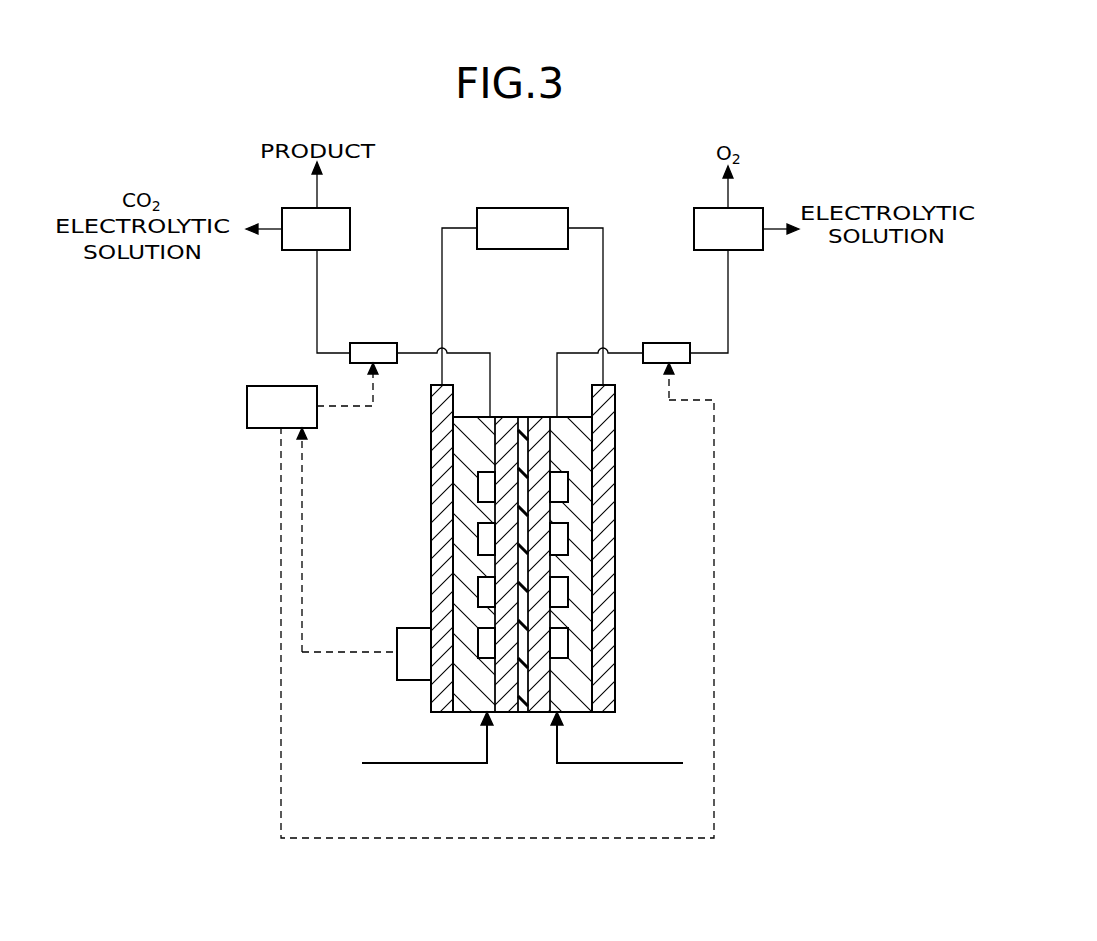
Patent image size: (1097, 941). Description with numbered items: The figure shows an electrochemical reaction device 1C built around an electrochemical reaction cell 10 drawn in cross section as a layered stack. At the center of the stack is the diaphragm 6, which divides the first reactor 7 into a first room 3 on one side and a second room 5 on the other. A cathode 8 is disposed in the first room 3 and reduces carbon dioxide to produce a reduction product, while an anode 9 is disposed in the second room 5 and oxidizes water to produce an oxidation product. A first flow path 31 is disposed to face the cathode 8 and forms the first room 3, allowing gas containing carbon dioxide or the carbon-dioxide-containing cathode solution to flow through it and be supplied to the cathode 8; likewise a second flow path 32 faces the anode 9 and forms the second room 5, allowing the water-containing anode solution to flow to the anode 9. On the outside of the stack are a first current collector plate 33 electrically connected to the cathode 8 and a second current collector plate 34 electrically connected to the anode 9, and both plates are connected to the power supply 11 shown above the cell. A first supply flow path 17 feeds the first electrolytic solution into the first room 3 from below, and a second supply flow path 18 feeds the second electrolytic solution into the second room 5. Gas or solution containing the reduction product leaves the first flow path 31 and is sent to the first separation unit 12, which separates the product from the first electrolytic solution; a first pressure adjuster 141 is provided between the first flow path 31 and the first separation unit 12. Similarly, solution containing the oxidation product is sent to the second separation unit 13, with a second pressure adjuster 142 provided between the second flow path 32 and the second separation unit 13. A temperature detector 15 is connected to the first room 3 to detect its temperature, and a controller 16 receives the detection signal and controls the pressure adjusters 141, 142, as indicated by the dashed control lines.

The electrochemical reaction device 1C is at (653, 145).
The first room 3 is at (519, 548).
The second room 5 is at (565, 602).
The diaphragm 6 is at (530, 438).
The first reactor 7 is at (592, 640).
The cathode 8 is at (456, 513).
The anode 9 is at (540, 510).
The electrochemical reaction cell 10 is at (527, 726).
The power supply 11 is at (490, 207).
The first separation unit 12 is at (292, 207).
The second separation unit 13 is at (752, 207).
The temperature detector 15 is at (397, 632).
The controller 16 is at (247, 406).
The first supply flow path 17 is at (431, 765).
The second supply flow path 18 is at (612, 765).
The first flow path 31 is at (480, 590).
The second flow path 32 is at (560, 588).
The first current collector plate 33 is at (442, 695).
The second current collector plate 34 is at (605, 697).
The first pressure adjuster 141 is at (378, 363).
The second pressure adjuster 142 is at (680, 363).